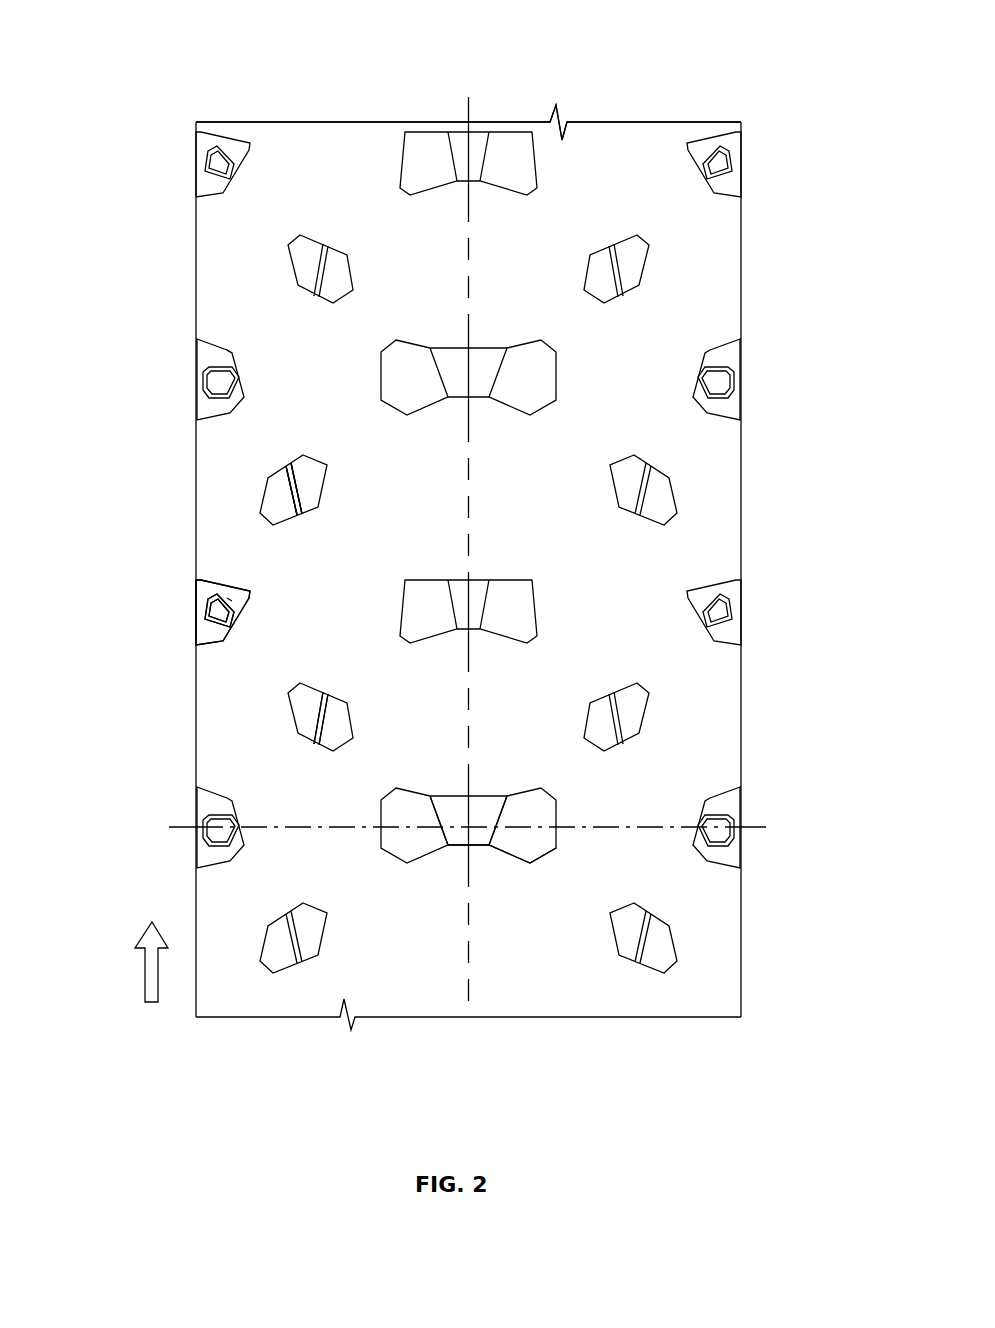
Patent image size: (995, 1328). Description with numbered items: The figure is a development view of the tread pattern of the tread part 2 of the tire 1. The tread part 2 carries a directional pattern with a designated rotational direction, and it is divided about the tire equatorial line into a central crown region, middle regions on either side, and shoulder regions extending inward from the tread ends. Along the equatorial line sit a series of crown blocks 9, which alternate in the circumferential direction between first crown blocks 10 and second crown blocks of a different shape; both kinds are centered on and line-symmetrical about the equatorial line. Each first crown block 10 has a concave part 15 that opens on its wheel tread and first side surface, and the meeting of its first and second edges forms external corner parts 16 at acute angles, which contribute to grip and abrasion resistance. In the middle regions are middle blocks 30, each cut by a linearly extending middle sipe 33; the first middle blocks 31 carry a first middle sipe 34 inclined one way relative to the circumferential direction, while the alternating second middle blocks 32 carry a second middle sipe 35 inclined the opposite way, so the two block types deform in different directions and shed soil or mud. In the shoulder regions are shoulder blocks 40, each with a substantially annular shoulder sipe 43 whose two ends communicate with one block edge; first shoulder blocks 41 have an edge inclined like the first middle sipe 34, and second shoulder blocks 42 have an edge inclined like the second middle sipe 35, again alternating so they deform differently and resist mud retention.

The tire 1 is at (647, 105).
The tread part 2 is at (503, 102).
The crown block 9 is at (528, 375).
The first crown block 10 is at (525, 813).
The concave part 15 is at (458, 810).
The external corner part 16 is at (492, 843).
The middle block 30 is at (308, 263).
The first middle block 31 is at (628, 265).
The second middle block 32 is at (653, 500).
The middle sipe 33 is at (287, 473).
The first middle sipe 34 is at (322, 707).
The second middle sipe 35 is at (294, 489).
The shoulder block 40 is at (222, 380).
The first shoulder block 41 is at (712, 613).
The second shoulder block 42 is at (717, 383).
The shoulder sipe 43 is at (230, 352).